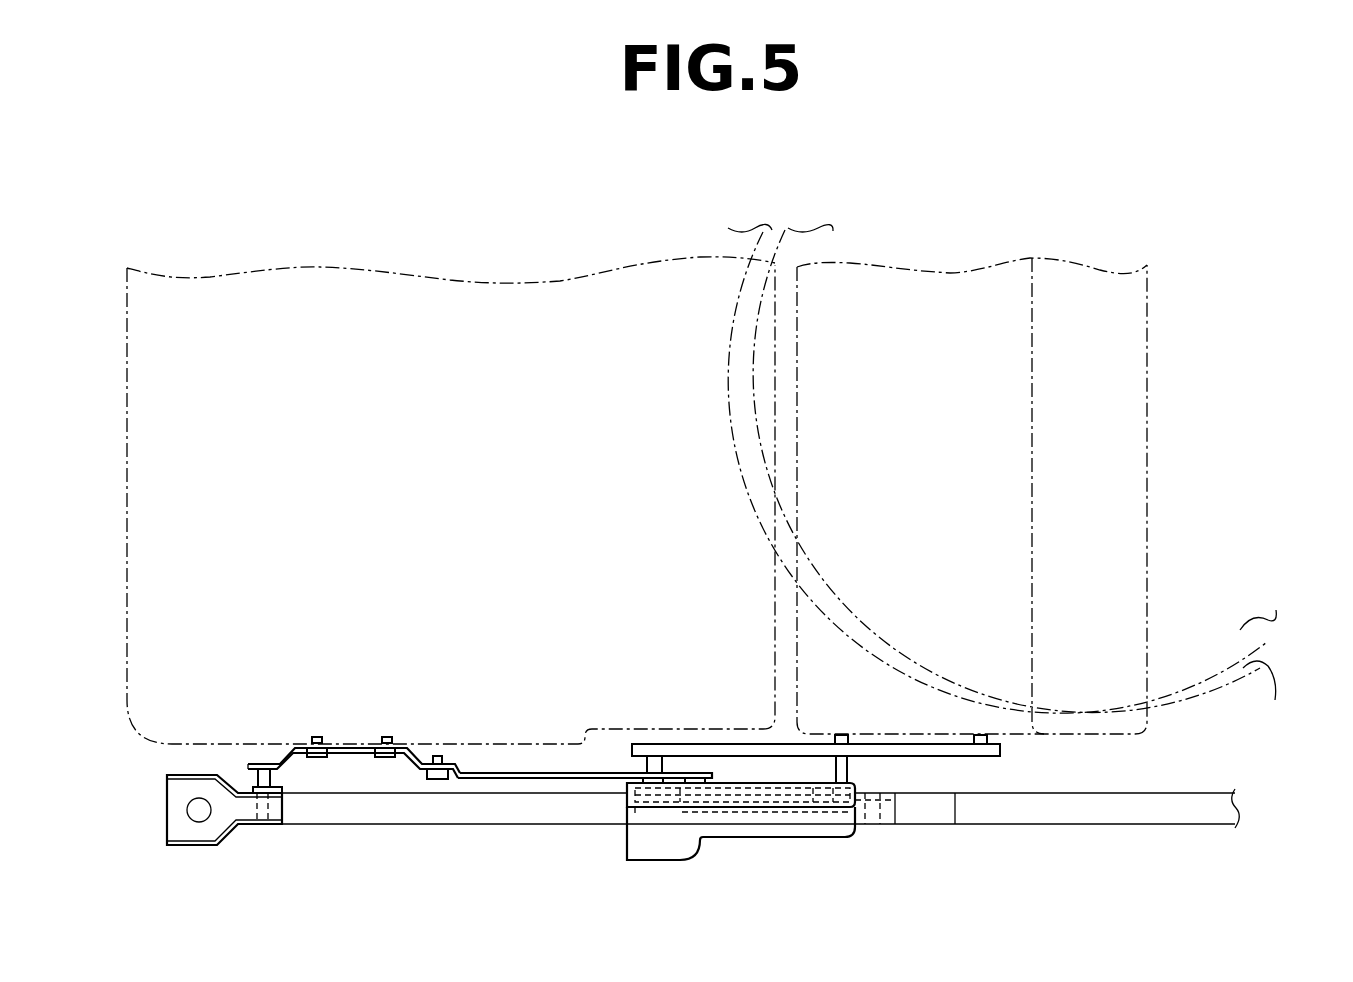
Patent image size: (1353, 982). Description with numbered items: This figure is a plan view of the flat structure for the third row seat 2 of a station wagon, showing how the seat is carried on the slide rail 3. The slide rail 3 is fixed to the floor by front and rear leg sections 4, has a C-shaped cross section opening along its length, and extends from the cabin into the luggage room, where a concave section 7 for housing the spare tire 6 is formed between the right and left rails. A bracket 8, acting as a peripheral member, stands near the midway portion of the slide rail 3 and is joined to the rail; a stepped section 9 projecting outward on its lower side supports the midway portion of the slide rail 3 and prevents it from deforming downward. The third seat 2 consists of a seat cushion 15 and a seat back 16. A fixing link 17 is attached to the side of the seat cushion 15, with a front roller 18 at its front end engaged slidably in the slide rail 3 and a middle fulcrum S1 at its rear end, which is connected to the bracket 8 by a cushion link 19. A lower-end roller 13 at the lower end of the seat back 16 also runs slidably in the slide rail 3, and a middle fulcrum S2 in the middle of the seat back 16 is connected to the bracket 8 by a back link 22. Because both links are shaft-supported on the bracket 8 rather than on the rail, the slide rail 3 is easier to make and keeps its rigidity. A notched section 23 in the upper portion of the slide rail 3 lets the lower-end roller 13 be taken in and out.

The third row seat 2 is at (698, 220).
The slide rail 3 is at (1078, 808).
The leg section 4 is at (172, 812).
The spare tire 6 is at (1272, 618).
The concave section 7 is at (1247, 665).
The bracket 8 is at (747, 838).
The stepped section 9 is at (707, 812).
The lower-end roller 13 is at (870, 800).
The seat cushion 15 is at (586, 276).
The seat back 16 is at (947, 276).
The fixing link 17 is at (358, 743).
The front roller 18 is at (289, 797).
The cushion link 19 is at (538, 779).
The back link 22 is at (808, 757).
The notched section 23 is at (937, 808).
The middle fulcrum S1 is at (433, 781).
The middle fulcrum S2 is at (1000, 740).